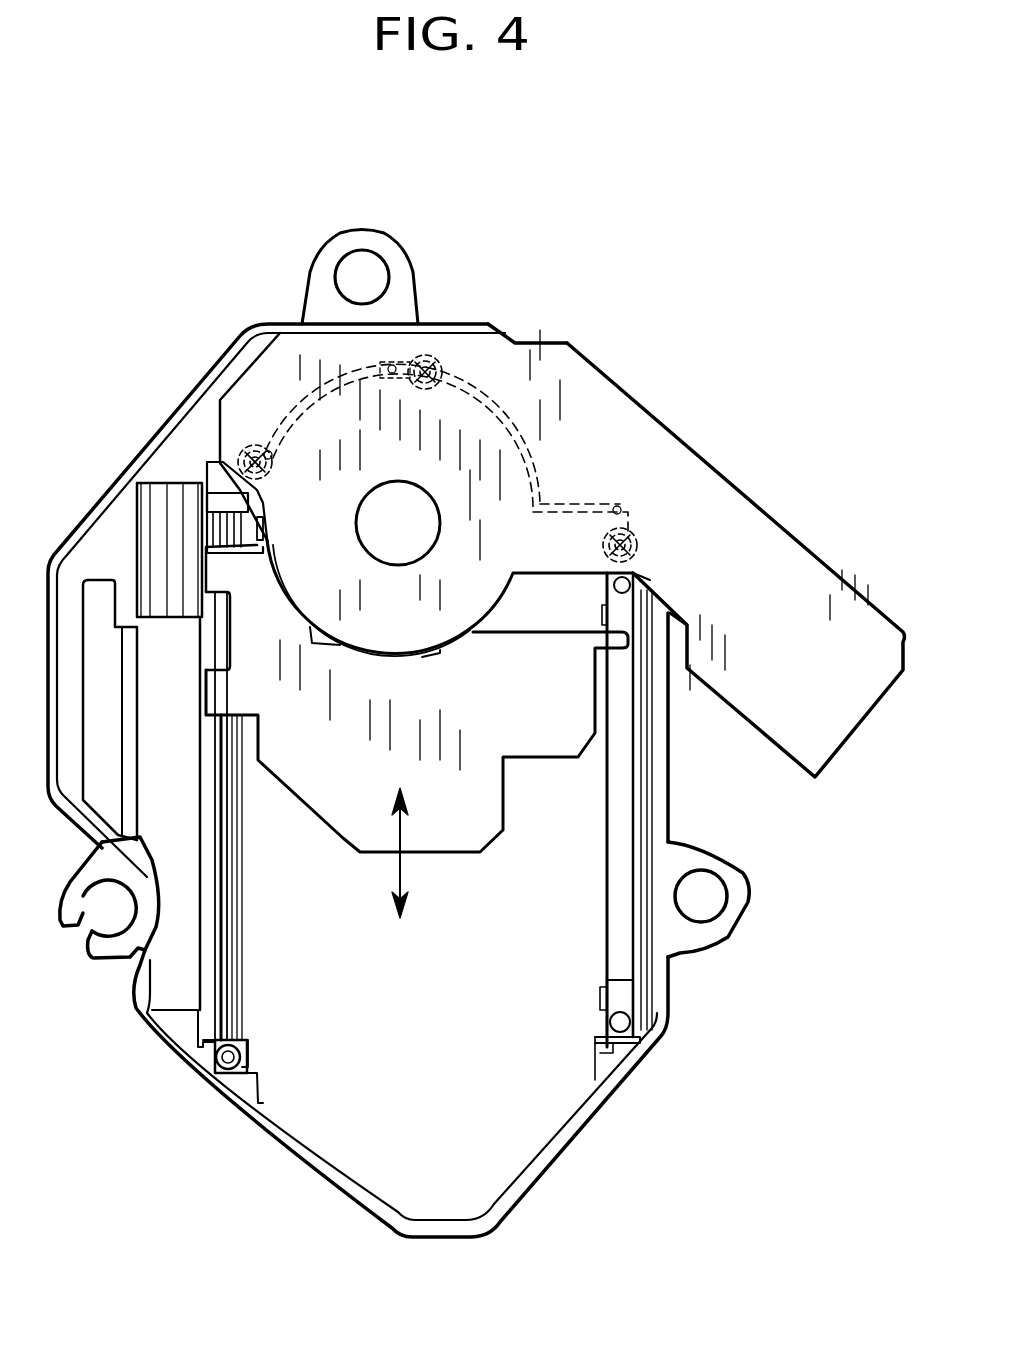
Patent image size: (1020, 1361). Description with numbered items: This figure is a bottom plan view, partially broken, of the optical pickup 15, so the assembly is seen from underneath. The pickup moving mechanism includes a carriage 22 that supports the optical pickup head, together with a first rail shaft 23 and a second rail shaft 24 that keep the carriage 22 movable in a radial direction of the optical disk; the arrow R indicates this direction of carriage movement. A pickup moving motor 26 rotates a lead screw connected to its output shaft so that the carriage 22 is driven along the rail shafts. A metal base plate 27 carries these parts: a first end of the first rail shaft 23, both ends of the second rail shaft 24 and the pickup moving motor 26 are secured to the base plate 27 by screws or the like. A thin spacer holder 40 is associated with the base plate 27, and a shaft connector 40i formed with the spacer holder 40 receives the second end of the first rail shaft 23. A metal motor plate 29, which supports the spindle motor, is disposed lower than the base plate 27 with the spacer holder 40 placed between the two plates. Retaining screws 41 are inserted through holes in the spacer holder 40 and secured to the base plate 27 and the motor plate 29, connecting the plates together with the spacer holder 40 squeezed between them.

The optical pickup 15 is at (476, 262).
The carriage 22 is at (333, 812).
The first rail shaft 23 is at (238, 1000).
The second rail shaft 24 is at (607, 874).
The pickup moving motor 26 is at (152, 508).
The base plate 27 is at (513, 1145).
The motor plate 29 is at (655, 432).
The spacer holder 40 is at (515, 432).
The shaft connector 40i is at (230, 503).
The retaining screws 41 is at (257, 445).
The direction of movement R is at (415, 853).